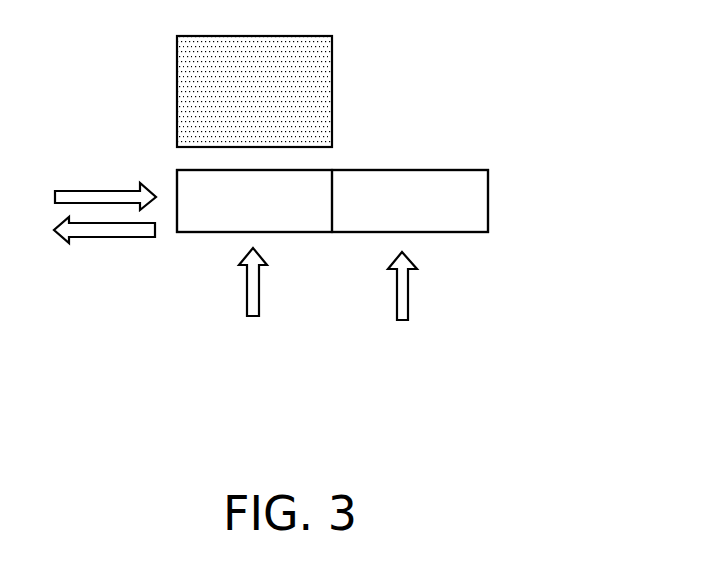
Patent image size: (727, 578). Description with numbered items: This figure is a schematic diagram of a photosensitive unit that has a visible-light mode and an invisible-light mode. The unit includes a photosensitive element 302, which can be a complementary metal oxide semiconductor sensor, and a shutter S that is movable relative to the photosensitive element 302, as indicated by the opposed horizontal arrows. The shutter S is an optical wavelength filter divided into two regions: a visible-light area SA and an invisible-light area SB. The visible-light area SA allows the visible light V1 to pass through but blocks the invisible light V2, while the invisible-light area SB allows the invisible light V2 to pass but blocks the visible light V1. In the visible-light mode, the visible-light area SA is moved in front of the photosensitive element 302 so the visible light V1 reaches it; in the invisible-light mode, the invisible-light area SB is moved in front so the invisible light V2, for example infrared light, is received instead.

The photosensitive element 302 is at (332, 84).
The shutter S is at (491, 140).
The visible-light area SA is at (205, 232).
The invisible-light area SB is at (488, 201).
The visible light V1 is at (253, 307).
The invisible light V2 is at (403, 312).